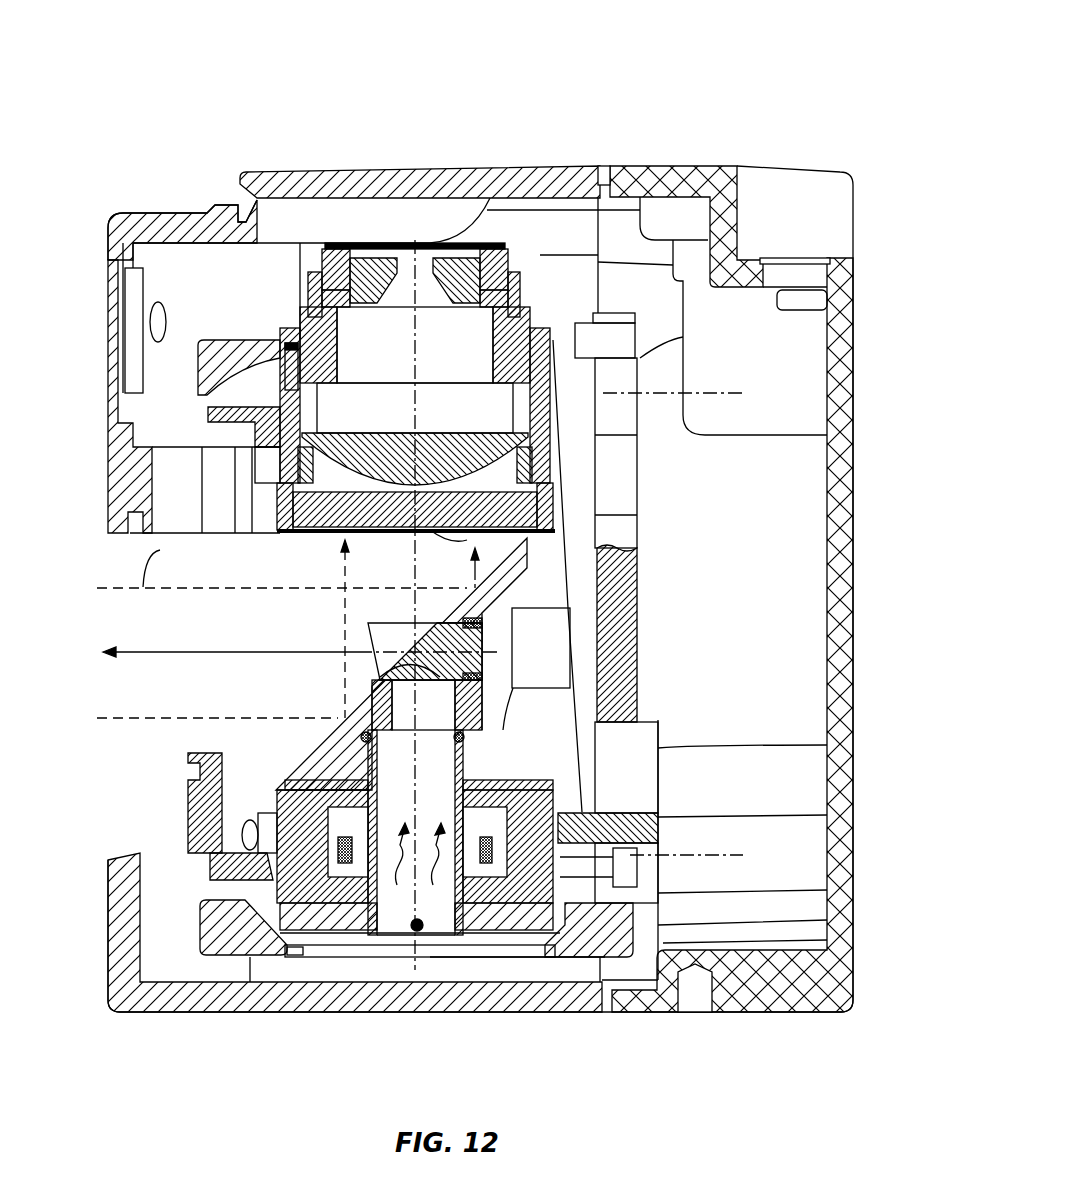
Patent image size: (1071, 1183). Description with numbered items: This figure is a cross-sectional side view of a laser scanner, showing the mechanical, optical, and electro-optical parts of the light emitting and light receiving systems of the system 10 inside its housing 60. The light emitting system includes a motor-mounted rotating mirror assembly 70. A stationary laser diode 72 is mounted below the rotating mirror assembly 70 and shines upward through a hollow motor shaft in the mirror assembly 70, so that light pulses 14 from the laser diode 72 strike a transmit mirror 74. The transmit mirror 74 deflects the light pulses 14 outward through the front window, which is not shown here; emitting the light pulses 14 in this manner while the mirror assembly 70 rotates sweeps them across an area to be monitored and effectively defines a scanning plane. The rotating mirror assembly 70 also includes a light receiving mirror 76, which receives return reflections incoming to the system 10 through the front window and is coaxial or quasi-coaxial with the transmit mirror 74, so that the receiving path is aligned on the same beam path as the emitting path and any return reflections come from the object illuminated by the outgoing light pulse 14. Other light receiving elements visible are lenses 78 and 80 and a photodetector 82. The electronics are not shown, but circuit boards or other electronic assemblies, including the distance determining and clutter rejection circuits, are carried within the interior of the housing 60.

The system 10 is at (720, 88).
The light pulses 14 is at (177, 651).
The housing 60 is at (568, 1005).
The rotating mirror assembly 70 is at (516, 738).
The laser diode 72 is at (417, 932).
The transmit mirror 74 is at (485, 635).
The light receiving mirror 76 is at (593, 558).
The lens 78 is at (530, 505).
The lens 80 is at (510, 442).
The photodetector 82 is at (425, 262).